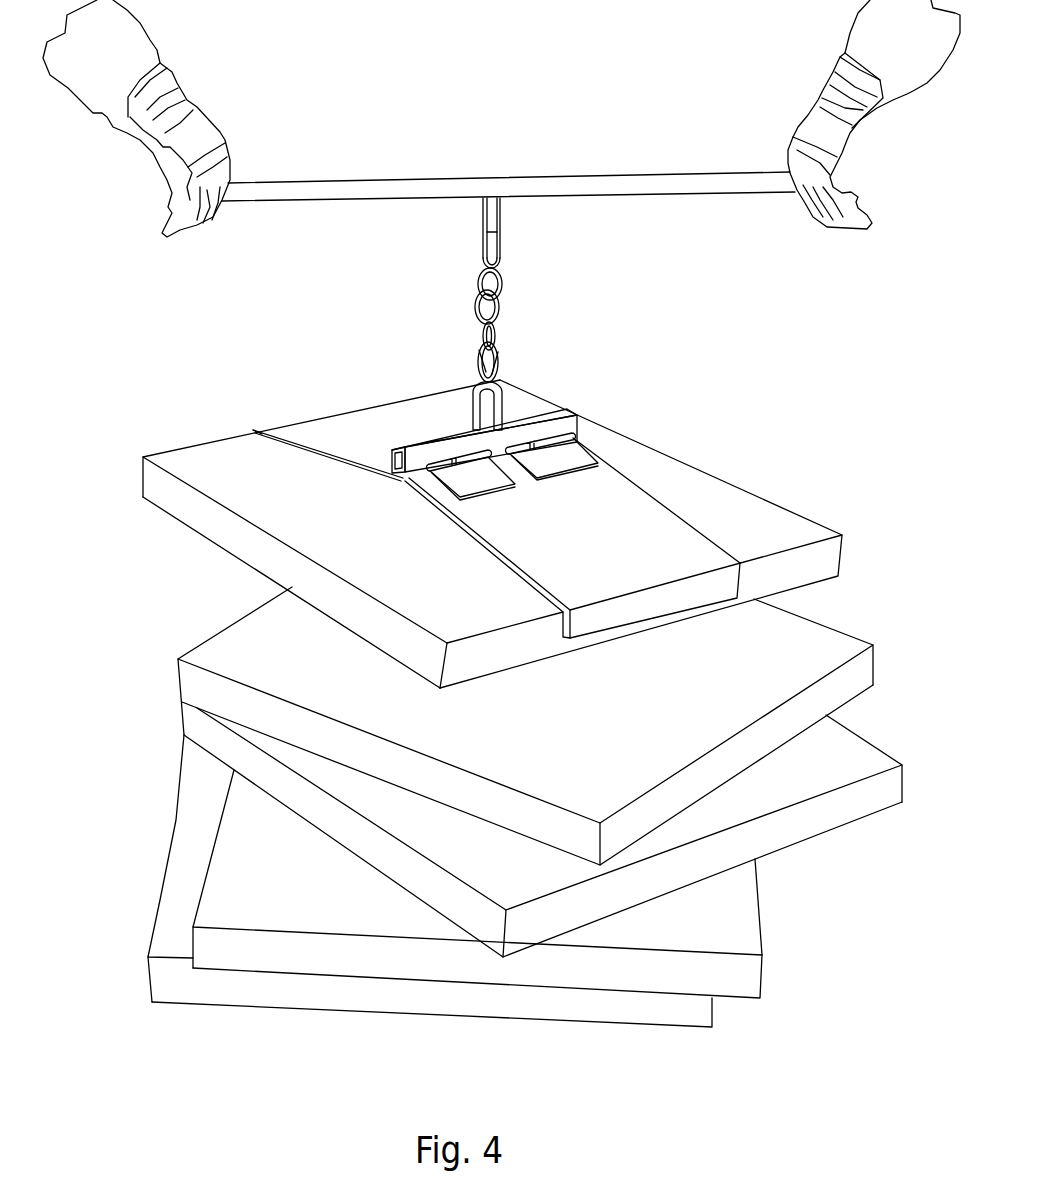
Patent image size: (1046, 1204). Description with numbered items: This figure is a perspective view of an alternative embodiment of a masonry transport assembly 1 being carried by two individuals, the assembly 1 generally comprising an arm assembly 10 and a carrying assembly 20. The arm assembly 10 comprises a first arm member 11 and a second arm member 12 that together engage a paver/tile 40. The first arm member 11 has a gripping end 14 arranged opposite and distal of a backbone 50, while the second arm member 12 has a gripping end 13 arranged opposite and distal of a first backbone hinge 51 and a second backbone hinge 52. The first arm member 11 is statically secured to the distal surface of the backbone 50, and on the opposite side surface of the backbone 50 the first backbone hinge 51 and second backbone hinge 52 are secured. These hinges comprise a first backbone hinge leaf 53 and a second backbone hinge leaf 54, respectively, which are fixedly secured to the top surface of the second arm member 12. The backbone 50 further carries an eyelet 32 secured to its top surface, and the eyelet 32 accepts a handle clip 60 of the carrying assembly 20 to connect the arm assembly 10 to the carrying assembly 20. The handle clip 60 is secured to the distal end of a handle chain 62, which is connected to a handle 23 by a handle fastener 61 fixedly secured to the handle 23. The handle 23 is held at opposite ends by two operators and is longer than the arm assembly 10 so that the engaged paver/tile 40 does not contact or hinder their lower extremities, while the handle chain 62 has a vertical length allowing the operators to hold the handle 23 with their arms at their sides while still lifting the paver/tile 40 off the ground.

The masonry transport assembly 1 is at (511, 508).
The arm assembly 10 is at (314, 492).
The first arm member 11 is at (334, 426).
The second arm member 12 is at (665, 543).
The gripping end 13 is at (673, 609).
The gripping end 14 is at (242, 416).
The carrying assembly 20 is at (508, 365).
The handle 23 is at (397, 213).
The eyelet 32 is at (511, 389).
The paver/tile 40 is at (489, 553).
The backbone 50 is at (503, 455).
The first backbone hinge 51 is at (579, 422).
The second backbone hinge 52 is at (451, 444).
The first backbone hinge leaf 53 is at (599, 446).
The second backbone hinge leaf 54 is at (456, 487).
The handle clip 60 is at (513, 340).
The handle fastener 61 is at (515, 218).
The handle chain 62 is at (517, 260).